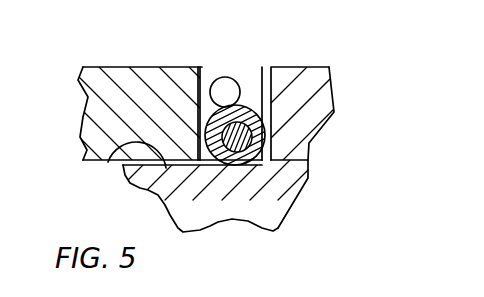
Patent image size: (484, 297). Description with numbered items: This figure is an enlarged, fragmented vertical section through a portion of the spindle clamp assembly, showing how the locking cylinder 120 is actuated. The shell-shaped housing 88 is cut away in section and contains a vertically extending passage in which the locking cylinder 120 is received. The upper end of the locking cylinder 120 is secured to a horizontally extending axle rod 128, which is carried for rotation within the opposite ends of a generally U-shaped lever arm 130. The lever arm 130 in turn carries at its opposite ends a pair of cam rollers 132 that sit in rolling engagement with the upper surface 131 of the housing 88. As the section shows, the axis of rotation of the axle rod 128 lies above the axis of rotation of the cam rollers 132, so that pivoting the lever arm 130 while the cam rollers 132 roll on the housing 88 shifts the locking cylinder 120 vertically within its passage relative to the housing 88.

The housing 88 is at (345, 89).
The locking cylinder 120 is at (267, 69).
The axle rod 128 is at (220, 78).
The lever arm 130 is at (113, 72).
The upper surface 131 is at (108, 163).
The cam rollers 132 is at (262, 160).